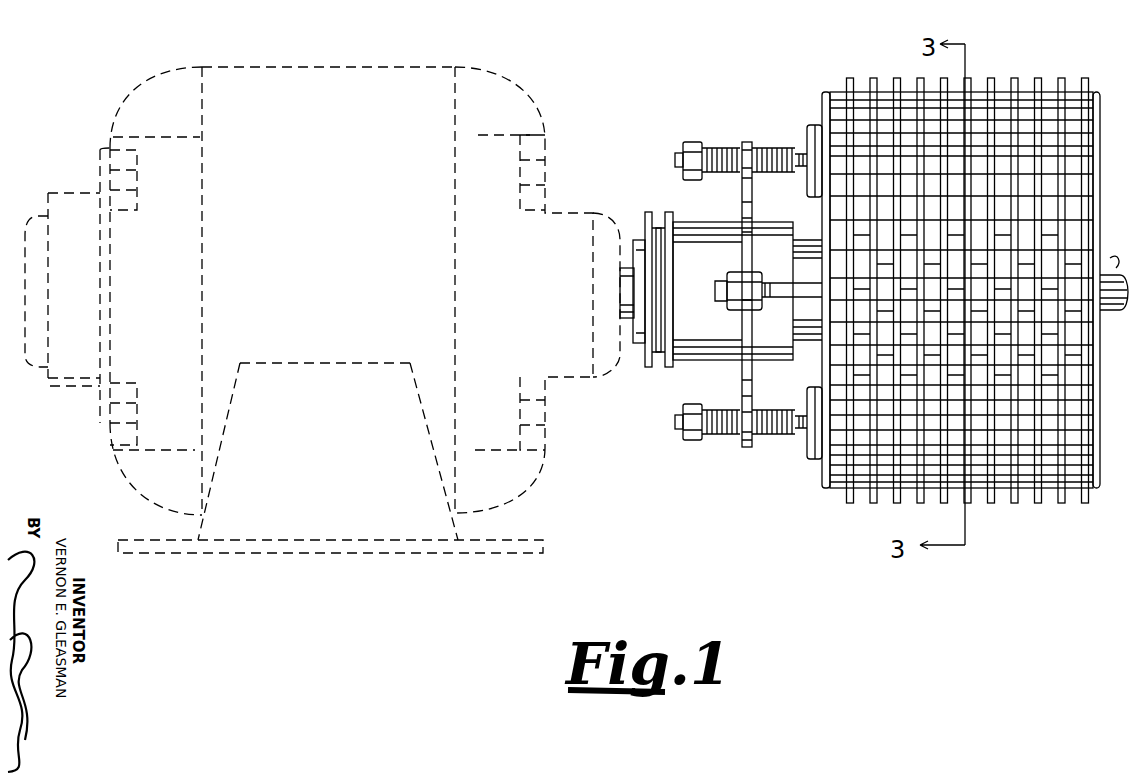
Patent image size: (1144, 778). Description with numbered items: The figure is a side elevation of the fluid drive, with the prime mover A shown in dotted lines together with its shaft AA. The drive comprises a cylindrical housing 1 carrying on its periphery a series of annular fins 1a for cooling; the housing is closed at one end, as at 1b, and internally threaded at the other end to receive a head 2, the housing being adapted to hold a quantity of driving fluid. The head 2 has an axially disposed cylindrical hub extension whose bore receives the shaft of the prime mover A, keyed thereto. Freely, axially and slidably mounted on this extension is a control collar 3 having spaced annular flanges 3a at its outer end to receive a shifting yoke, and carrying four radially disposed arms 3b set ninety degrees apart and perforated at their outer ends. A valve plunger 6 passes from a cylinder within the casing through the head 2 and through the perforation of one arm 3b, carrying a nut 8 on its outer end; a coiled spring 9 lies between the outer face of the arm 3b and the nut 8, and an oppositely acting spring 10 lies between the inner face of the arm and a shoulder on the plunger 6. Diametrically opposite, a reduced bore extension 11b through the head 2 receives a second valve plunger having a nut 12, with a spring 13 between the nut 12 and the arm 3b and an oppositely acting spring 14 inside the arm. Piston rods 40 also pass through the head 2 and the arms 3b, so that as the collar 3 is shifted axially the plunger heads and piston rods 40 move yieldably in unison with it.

The prime mover A is at (290, 553).
The motor shaft AA is at (626, 312).
The cylindrical housing 1 is at (1050, 498).
The annular fins 1a is at (995, 503).
The closed end of housing 1b is at (1098, 164).
The head 2 is at (802, 246).
The control collar 3 is at (708, 348).
The annular flanges 3a is at (667, 368).
The radially disposed arms 3b is at (745, 202).
The valve plunger 6 is at (676, 160).
The nut 8 is at (692, 142).
The coiled spring 9 is at (722, 148).
The oppositely acting spring 10 is at (770, 148).
The reduced extension of bore 11b is at (677, 426).
The nut 12 is at (693, 440).
The spring 13 is at (722, 434).
The oppositely acting spring 14 is at (770, 434).
The piston rods 40 is at (728, 280).